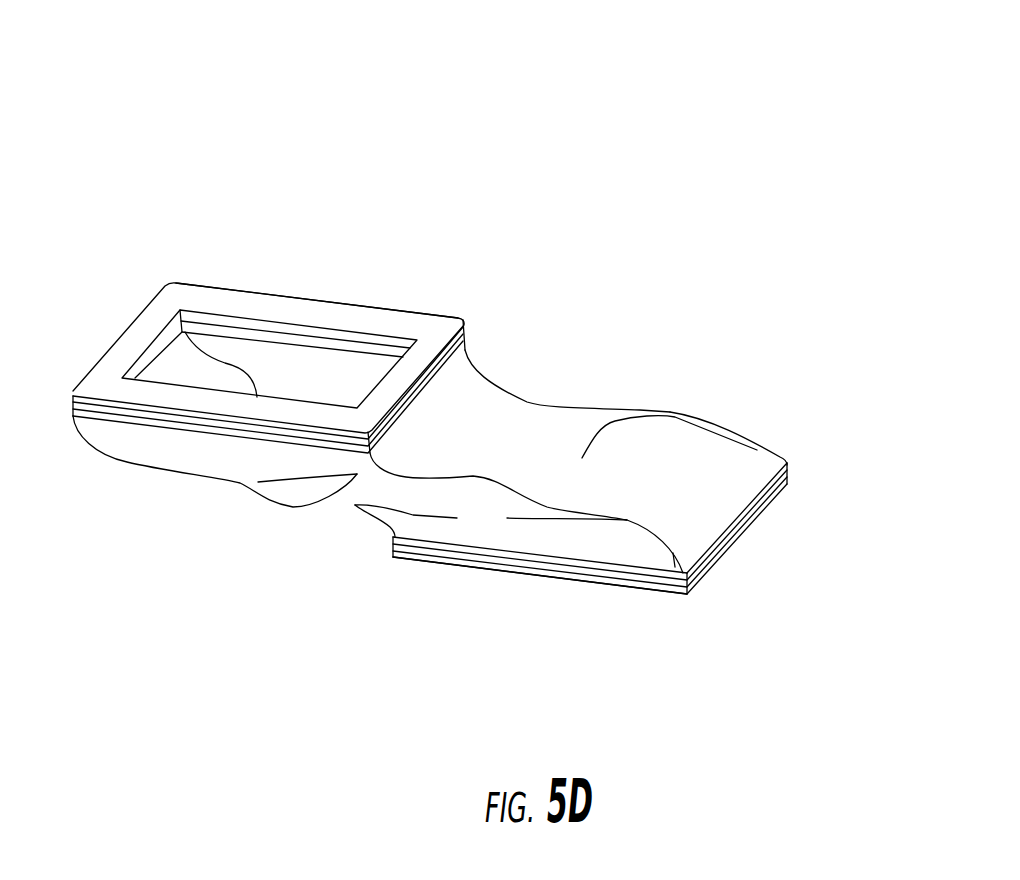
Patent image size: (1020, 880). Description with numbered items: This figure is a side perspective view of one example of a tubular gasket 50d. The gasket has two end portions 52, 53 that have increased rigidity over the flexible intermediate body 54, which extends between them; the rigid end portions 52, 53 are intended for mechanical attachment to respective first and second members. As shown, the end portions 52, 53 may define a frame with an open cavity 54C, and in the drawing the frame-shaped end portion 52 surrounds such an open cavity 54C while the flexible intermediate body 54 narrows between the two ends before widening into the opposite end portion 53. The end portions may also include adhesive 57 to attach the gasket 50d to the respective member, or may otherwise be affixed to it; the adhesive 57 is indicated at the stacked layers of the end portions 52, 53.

The tubular gasket 50d is at (663, 132).
The end portion 52 is at (343, 304).
The end portion 53 is at (767, 505).
The flexible intermediate body 54 is at (351, 491).
The open cavity 54C is at (216, 360).
The adhesive 57 is at (229, 278).